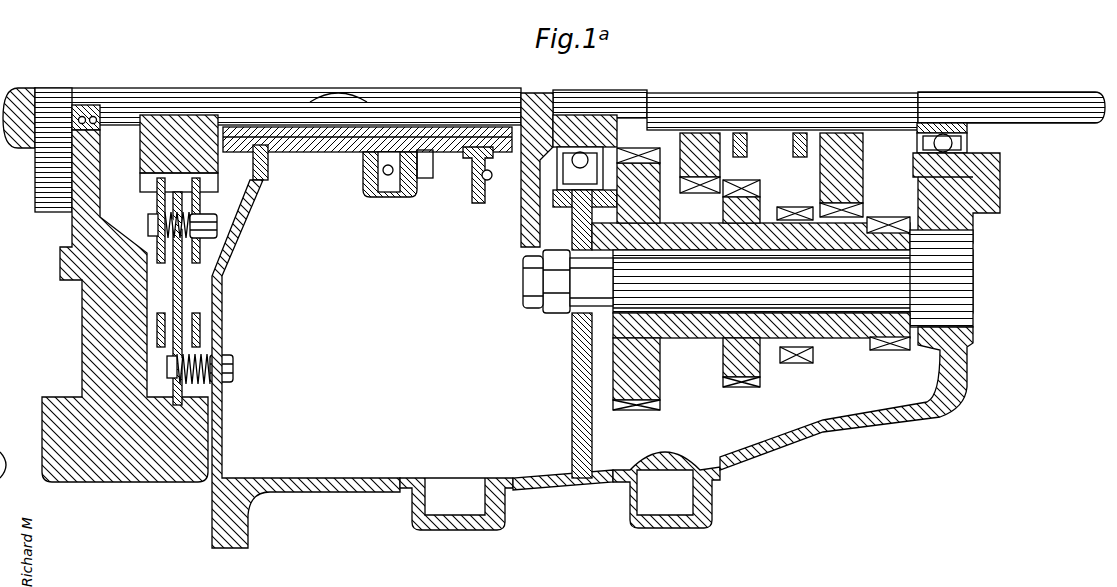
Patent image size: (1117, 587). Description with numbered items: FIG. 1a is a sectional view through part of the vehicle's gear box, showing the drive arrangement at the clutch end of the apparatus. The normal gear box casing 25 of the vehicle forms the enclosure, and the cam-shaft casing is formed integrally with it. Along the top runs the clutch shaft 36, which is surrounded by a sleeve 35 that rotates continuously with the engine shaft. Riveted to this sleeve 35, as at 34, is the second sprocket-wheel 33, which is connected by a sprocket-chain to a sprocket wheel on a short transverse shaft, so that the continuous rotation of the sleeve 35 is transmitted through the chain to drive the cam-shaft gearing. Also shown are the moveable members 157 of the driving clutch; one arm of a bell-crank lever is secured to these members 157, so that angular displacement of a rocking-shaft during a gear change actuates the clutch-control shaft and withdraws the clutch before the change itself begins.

The gear box casing 25 is at (955, 358).
The second sprocket-wheel 33 is at (487, 182).
The rivet 34 is at (482, 176).
The sleeve 35 is at (343, 140).
The clutch shaft 36 is at (327, 102).
The moveable members of the driving clutch 157 is at (360, 152).